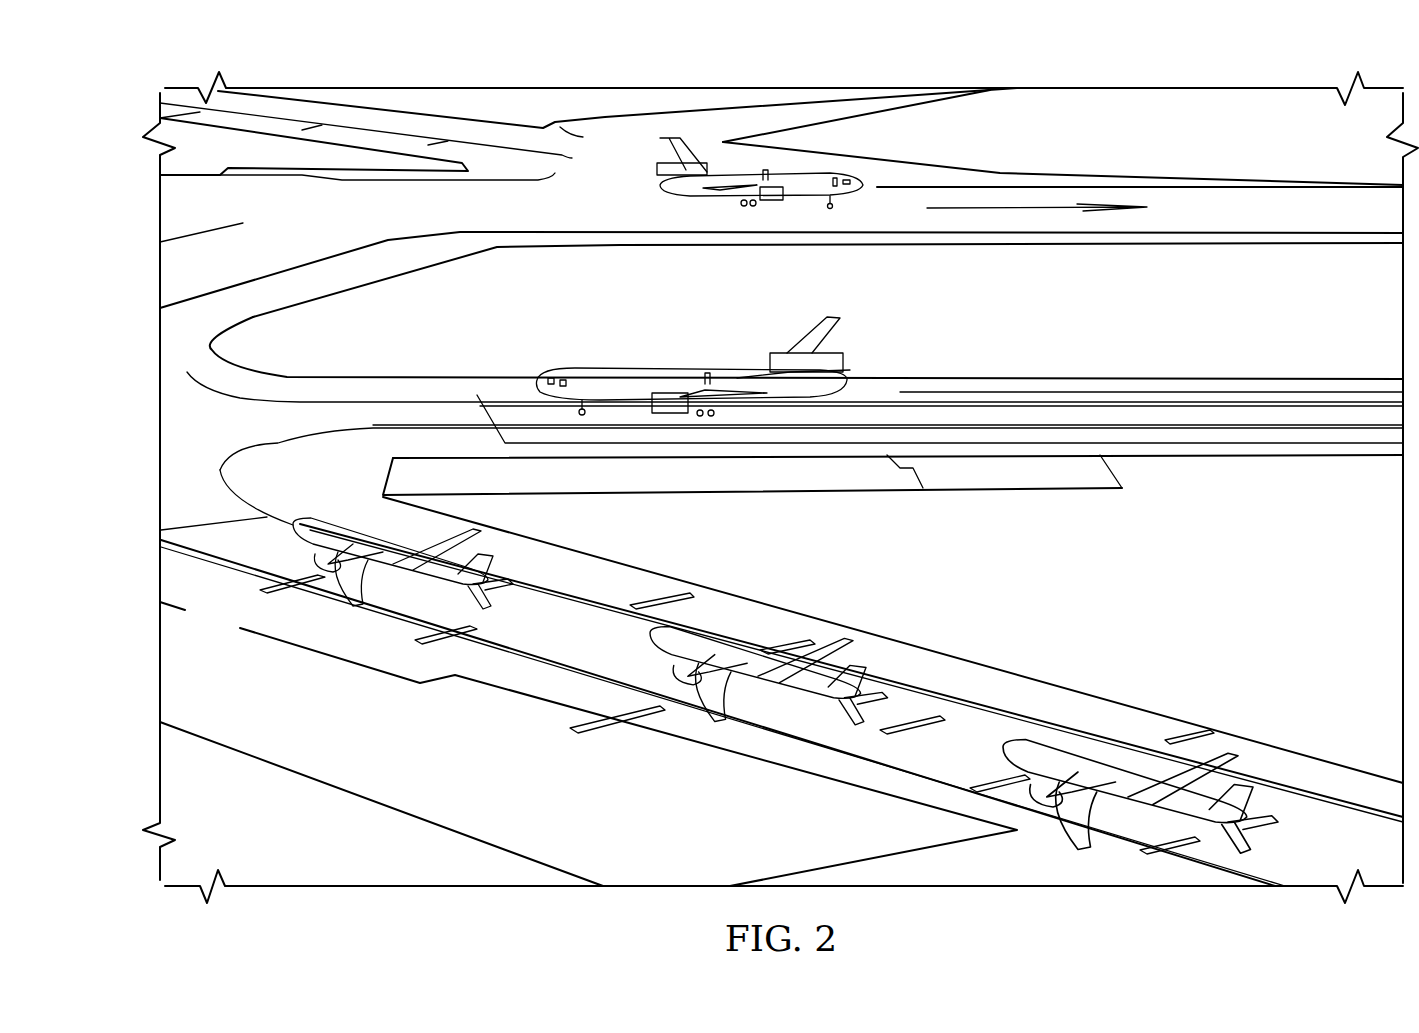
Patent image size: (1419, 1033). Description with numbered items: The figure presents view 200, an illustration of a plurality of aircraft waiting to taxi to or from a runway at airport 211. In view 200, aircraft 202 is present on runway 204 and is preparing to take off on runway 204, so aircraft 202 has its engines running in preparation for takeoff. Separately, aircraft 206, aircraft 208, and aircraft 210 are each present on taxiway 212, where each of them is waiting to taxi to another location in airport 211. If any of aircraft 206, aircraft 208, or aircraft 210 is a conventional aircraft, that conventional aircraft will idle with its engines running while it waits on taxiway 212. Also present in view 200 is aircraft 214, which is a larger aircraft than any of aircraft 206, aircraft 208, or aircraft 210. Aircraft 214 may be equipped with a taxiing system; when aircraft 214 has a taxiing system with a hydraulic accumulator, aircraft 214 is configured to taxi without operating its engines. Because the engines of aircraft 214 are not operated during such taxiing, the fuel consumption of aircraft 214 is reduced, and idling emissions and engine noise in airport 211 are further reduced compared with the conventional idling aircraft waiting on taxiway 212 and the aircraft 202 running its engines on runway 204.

The view 200 is at (108, 98).
The aircraft 202 is at (810, 197).
The runway 204 is at (1236, 222).
The aircraft 206 is at (265, 561).
The aircraft 208 is at (712, 637).
The aircraft 210 is at (1088, 828).
The airport 211 is at (300, 87).
The taxiway 212 is at (937, 750).
The aircraft 214 is at (620, 368).